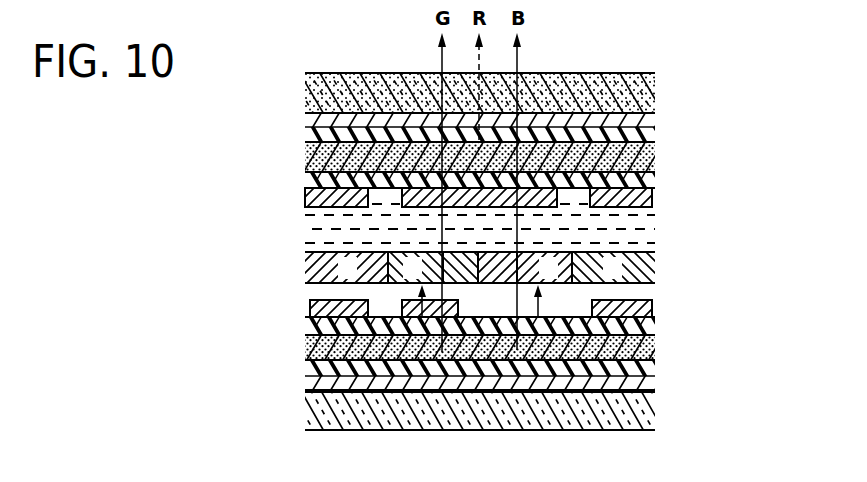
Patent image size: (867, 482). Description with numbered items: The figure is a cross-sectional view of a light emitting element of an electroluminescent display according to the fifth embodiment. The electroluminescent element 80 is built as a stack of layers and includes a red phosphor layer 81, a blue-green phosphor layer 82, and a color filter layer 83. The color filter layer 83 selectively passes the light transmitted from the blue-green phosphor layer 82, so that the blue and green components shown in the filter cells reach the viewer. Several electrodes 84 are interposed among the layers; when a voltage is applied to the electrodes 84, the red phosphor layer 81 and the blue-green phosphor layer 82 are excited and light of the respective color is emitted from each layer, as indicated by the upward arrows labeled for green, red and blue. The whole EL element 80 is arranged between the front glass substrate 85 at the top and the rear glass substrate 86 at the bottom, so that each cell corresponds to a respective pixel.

The electroluminescent element 80 is at (287, 397).
The red phosphor layer 81 is at (637, 158).
The blue-green phosphor layer 82 is at (640, 343).
The color filter layer 83 is at (645, 265).
The electrodes 84 is at (635, 123).
The front glass substrate 85 is at (637, 93).
The rear glass substrate 86 is at (640, 410).